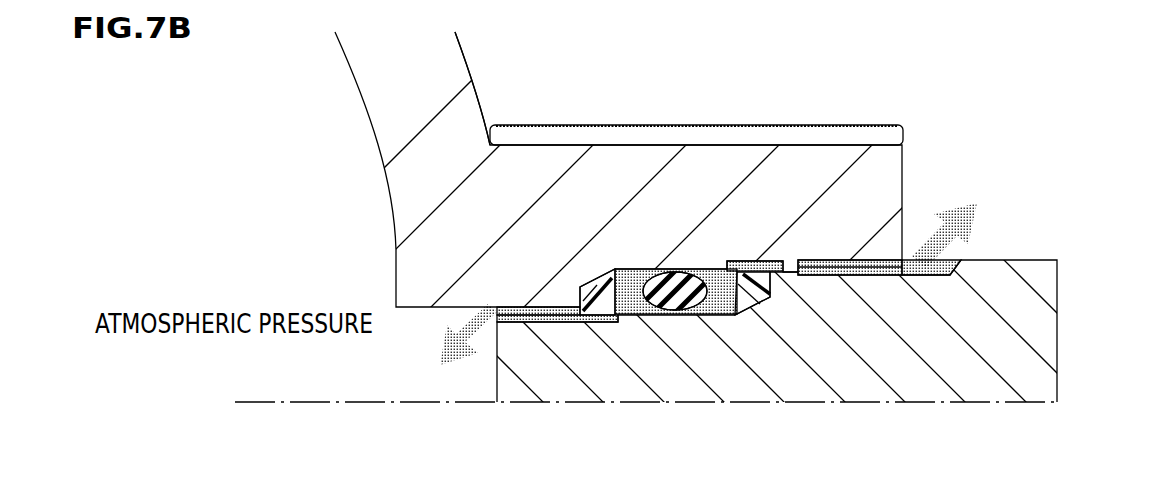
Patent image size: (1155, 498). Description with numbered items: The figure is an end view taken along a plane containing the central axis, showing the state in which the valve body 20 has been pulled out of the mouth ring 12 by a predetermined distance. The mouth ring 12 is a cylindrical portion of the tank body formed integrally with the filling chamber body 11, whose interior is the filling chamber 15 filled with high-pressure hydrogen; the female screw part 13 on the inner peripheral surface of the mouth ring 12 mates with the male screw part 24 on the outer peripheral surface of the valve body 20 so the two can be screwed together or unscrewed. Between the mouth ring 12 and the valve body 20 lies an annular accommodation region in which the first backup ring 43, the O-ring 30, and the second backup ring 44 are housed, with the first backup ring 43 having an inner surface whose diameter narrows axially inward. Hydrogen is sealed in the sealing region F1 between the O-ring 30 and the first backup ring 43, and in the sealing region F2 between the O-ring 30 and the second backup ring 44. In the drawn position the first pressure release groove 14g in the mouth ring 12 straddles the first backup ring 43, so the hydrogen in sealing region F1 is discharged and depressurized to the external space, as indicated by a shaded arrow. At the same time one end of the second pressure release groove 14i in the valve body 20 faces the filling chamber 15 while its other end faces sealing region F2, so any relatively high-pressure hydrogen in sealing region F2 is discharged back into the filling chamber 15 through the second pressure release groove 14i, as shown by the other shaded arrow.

The filling chamber body 11 is at (464, 80).
The mouth ring 12 is at (697, 125).
The female screw part 13 is at (803, 260).
The first pressure release groove 14g is at (745, 261).
The second pressure release groove 14i is at (517, 307).
The filling chamber 15 is at (317, 182).
The valve body 20 is at (1057, 333).
The male screw part 24 is at (953, 277).
The O-ring 30 is at (656, 268).
The first backup ring 43 is at (762, 295).
The second backup ring 44 is at (598, 287).
The sealing region F1 is at (725, 315).
The sealing region F2 is at (637, 317).